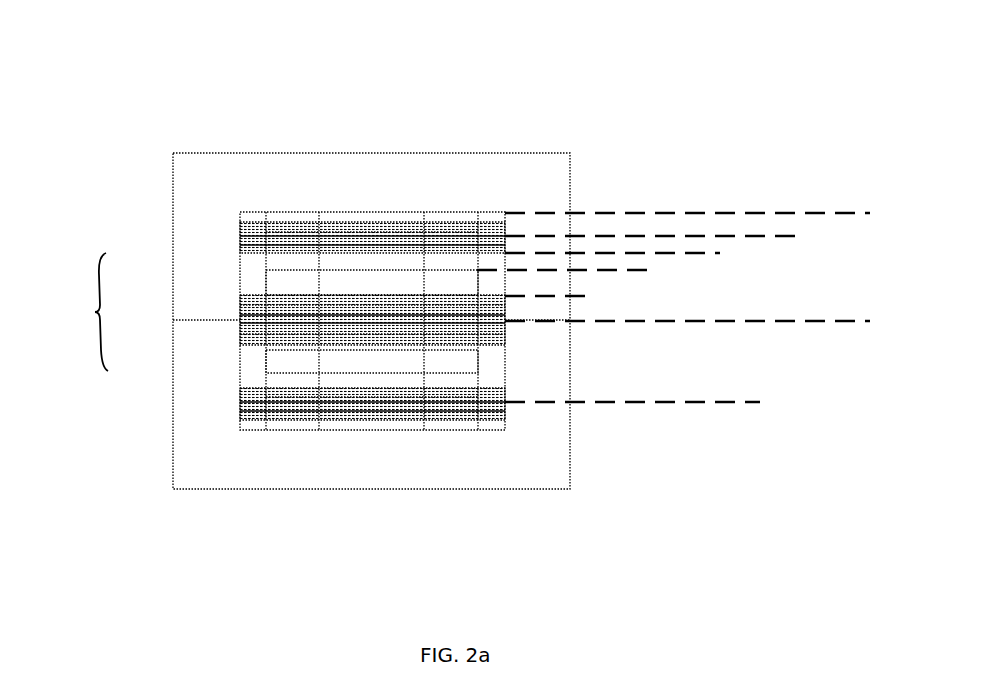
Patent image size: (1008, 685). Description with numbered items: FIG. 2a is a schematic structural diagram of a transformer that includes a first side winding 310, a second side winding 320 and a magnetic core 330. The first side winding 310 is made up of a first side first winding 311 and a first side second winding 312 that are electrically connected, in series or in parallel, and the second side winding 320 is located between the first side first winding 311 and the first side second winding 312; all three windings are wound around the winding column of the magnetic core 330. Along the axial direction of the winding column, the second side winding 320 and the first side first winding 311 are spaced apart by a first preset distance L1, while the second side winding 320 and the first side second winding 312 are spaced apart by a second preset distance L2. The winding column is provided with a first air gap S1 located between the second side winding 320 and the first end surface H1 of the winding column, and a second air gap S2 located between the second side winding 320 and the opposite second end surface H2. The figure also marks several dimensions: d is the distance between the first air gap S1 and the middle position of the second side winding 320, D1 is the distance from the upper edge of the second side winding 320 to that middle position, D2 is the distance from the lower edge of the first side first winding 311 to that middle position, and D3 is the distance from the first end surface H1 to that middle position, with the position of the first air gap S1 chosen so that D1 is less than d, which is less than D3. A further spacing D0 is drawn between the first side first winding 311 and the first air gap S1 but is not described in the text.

The first side winding 310 is at (74, 312).
The first side first winding 311 is at (246, 236).
The first side second winding 312 is at (246, 403).
The second side winding 320 is at (487, 322).
The magnetic core 330 is at (265, 167).
The first air gap S1 is at (352, 271).
The second air gap S2 is at (360, 370).
The first end surface H1 is at (456, 213).
The second end surface H2 is at (456, 429).
The distance D0 is at (258, 254).
The distance D1 is at (538, 272).
The distance D2 is at (680, 254).
The distance D3 is at (847, 214).
The distance d is at (630, 271).
The first preset distance L1 is at (767, 237).
The second preset distance L2 is at (722, 322).